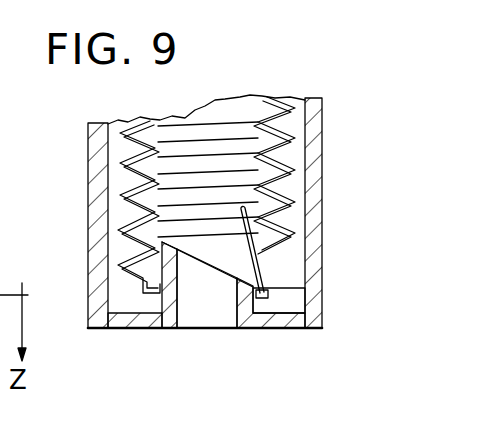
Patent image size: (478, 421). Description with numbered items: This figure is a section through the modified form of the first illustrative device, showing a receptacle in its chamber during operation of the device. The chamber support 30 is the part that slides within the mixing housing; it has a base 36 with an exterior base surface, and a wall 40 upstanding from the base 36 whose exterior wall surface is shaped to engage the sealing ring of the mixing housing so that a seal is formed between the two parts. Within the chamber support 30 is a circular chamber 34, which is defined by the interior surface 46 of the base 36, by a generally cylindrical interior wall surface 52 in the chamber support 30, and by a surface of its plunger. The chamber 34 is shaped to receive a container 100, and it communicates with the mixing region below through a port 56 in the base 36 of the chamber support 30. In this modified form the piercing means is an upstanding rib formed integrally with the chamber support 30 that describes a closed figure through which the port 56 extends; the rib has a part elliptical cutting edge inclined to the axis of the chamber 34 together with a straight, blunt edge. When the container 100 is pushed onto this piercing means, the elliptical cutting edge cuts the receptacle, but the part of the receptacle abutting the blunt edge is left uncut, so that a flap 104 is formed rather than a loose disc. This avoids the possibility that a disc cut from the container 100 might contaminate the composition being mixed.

The chamber support 30 is at (74, 222).
The chamber 34 is at (293, 302).
The base 36 is at (142, 323).
The wall 40 is at (88, 182).
The interior surface 46 is at (275, 307).
The interior wall surface 52 is at (304, 178).
The port 56 is at (222, 311).
The container 100 is at (213, 115).
The flap 104 is at (278, 267).